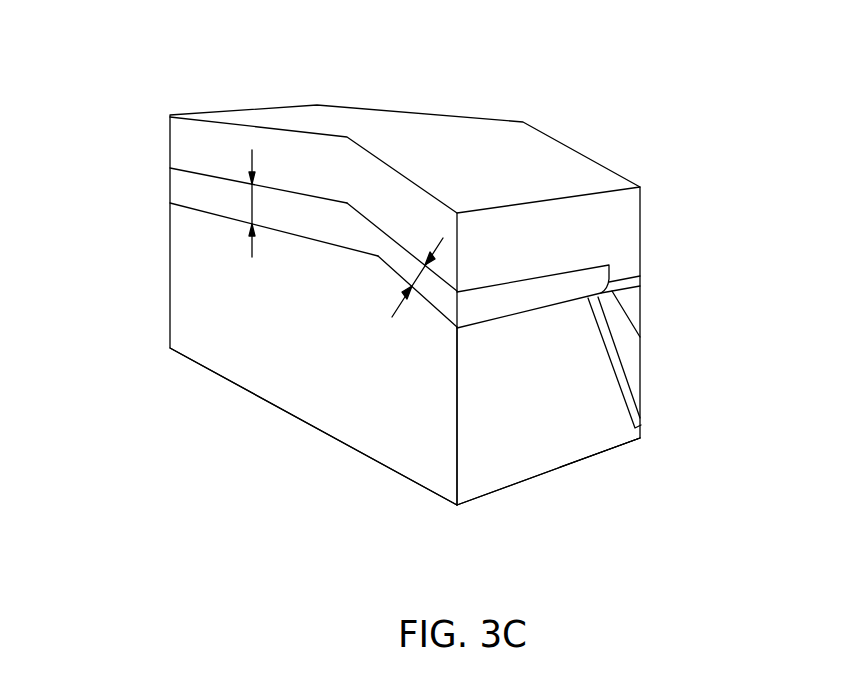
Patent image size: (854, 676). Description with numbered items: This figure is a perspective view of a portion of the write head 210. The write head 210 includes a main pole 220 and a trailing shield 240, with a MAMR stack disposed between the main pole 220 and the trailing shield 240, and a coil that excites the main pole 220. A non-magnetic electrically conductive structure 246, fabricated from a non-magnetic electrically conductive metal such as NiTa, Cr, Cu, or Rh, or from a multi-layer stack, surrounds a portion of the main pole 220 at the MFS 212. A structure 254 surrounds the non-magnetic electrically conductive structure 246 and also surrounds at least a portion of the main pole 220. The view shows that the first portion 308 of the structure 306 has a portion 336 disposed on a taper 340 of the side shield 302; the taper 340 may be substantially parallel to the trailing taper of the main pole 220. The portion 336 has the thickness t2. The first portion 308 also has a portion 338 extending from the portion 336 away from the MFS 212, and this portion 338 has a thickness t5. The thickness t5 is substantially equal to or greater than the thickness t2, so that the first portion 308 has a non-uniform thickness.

The write head 210 is at (140, 63).
The trailing shield 240 is at (630, 220).
The portion 338 is at (317, 233).
The portion 336 is at (447, 305).
The taper 340 is at (388, 272).
The side shield 302 is at (518, 445).
The first portion 308 is at (500, 302).
The structure 306 is at (572, 308).
The main pole 220 is at (635, 308).
The non-magnetic electrically conductive structure 246 is at (633, 363).
The structure 254 is at (635, 420).
The MFS 212 is at (597, 442).
The thickness t5 is at (252, 203).
The thickness t2 is at (423, 275).